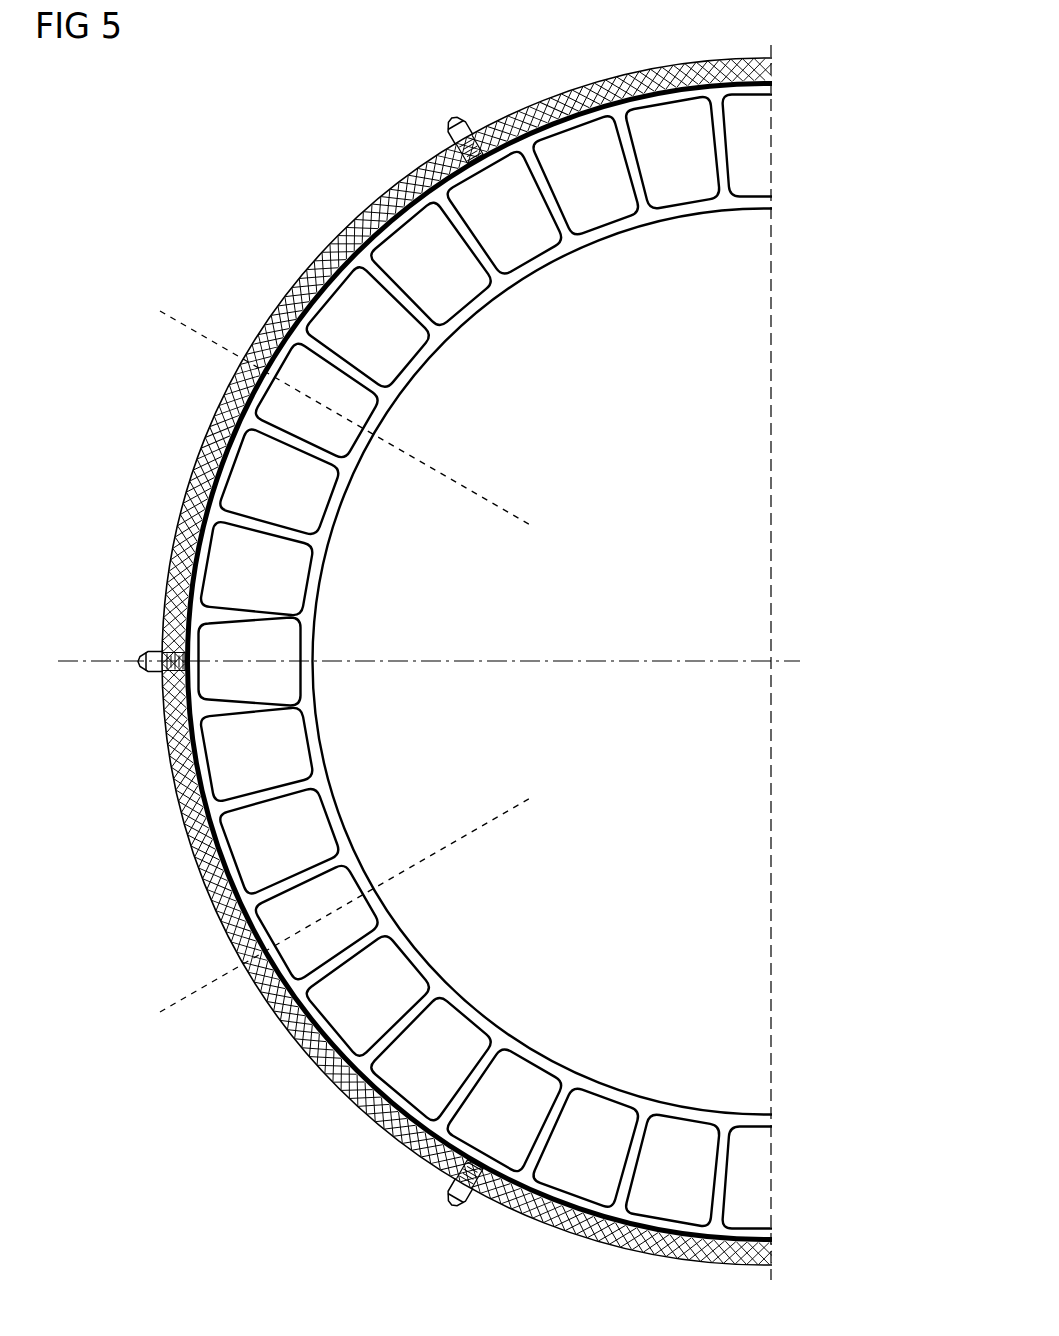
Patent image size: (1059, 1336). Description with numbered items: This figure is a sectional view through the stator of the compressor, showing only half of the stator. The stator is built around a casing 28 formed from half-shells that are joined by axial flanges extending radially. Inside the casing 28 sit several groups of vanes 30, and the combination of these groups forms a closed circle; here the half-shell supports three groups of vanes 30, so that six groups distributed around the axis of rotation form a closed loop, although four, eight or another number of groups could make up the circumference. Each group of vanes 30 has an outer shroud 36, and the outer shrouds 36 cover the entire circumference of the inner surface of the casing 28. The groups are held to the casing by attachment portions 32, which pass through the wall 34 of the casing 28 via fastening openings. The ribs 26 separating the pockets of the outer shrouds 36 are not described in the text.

The rib 26 is at (485, 262).
The casing 28 is at (200, 209).
The group of vanes 30 is at (615, 358).
The attachment portion 32 is at (450, 132).
The wall 34 is at (226, 425).
The outer shroud 36 is at (557, 130).